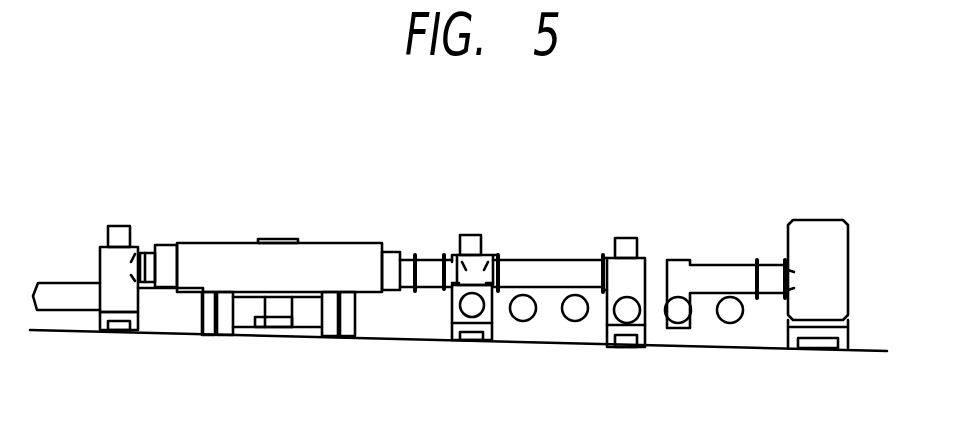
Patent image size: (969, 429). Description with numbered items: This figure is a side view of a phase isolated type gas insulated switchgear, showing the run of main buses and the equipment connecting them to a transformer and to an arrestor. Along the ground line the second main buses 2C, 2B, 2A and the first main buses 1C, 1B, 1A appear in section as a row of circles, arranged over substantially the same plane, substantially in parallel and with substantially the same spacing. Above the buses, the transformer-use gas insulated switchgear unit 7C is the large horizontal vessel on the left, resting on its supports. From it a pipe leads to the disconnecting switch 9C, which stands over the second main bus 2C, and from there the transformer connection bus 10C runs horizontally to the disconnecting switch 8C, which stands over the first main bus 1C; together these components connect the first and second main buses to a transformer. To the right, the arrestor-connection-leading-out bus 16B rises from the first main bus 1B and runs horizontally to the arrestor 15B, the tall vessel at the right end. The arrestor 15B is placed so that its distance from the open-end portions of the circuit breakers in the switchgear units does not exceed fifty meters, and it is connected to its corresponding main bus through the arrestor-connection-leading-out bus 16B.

The transformer-use gas insulated switchgear unit 7C is at (330, 260).
The disconnecting switch 9C is at (476, 262).
The transformer connection bus 10C is at (547, 275).
The disconnecting switch 8C is at (643, 262).
The arrestor-connection-leading-out bus 16B is at (715, 275).
The arrestor 15B is at (828, 237).
The second main bus 2C is at (472, 317).
The second main bus 2B is at (524, 321).
The second main bus 2A is at (575, 321).
The first main bus 1C is at (627, 323).
The first main bus 1B is at (679, 323).
The first main bus 1A is at (731, 323).